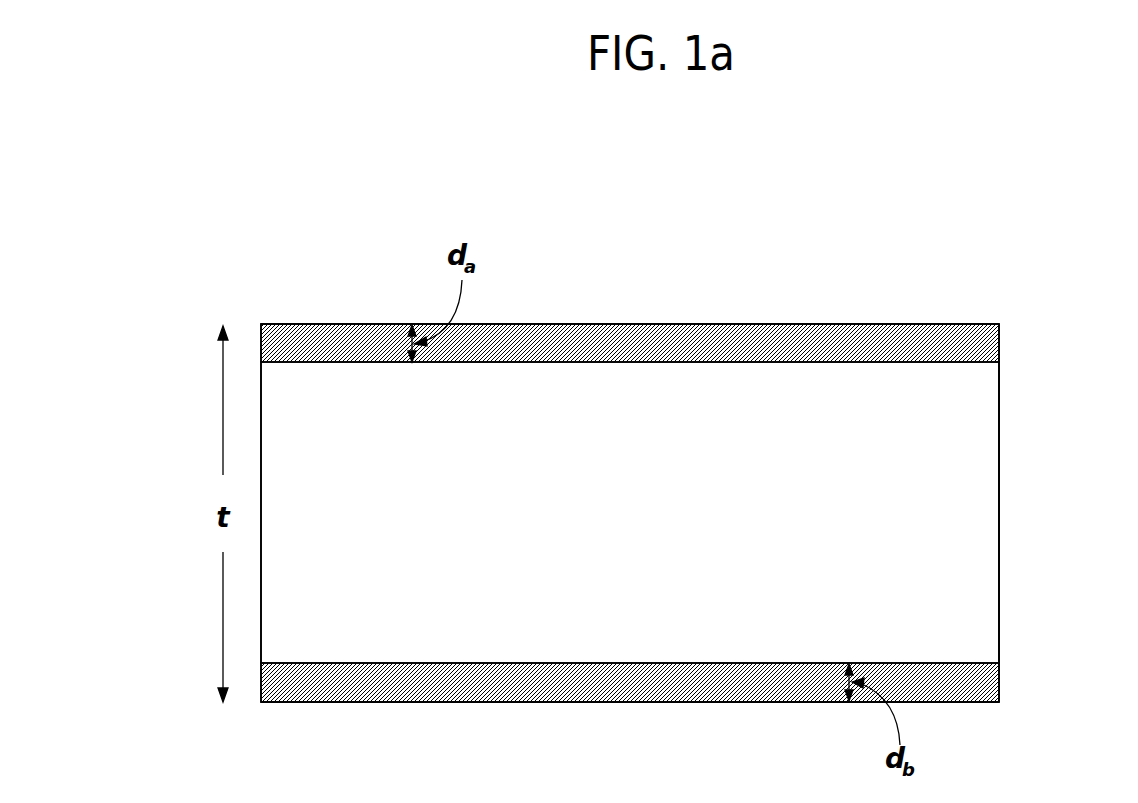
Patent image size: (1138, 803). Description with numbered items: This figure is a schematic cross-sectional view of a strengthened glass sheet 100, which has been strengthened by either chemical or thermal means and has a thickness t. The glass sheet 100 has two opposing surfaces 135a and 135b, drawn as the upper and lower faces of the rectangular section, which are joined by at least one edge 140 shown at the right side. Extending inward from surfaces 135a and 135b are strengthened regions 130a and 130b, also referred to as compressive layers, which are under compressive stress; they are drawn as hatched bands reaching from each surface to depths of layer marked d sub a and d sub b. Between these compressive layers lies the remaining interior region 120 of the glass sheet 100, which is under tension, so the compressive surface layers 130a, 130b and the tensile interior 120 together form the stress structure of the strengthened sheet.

The glass sheet 100 is at (643, 256).
The interior region 120 is at (630, 512).
The strengthened region 130a is at (999, 350).
The strengthened region 130b is at (999, 676).
The surface 135a is at (912, 324).
The surface 135b is at (498, 702).
The edge 140 is at (999, 507).